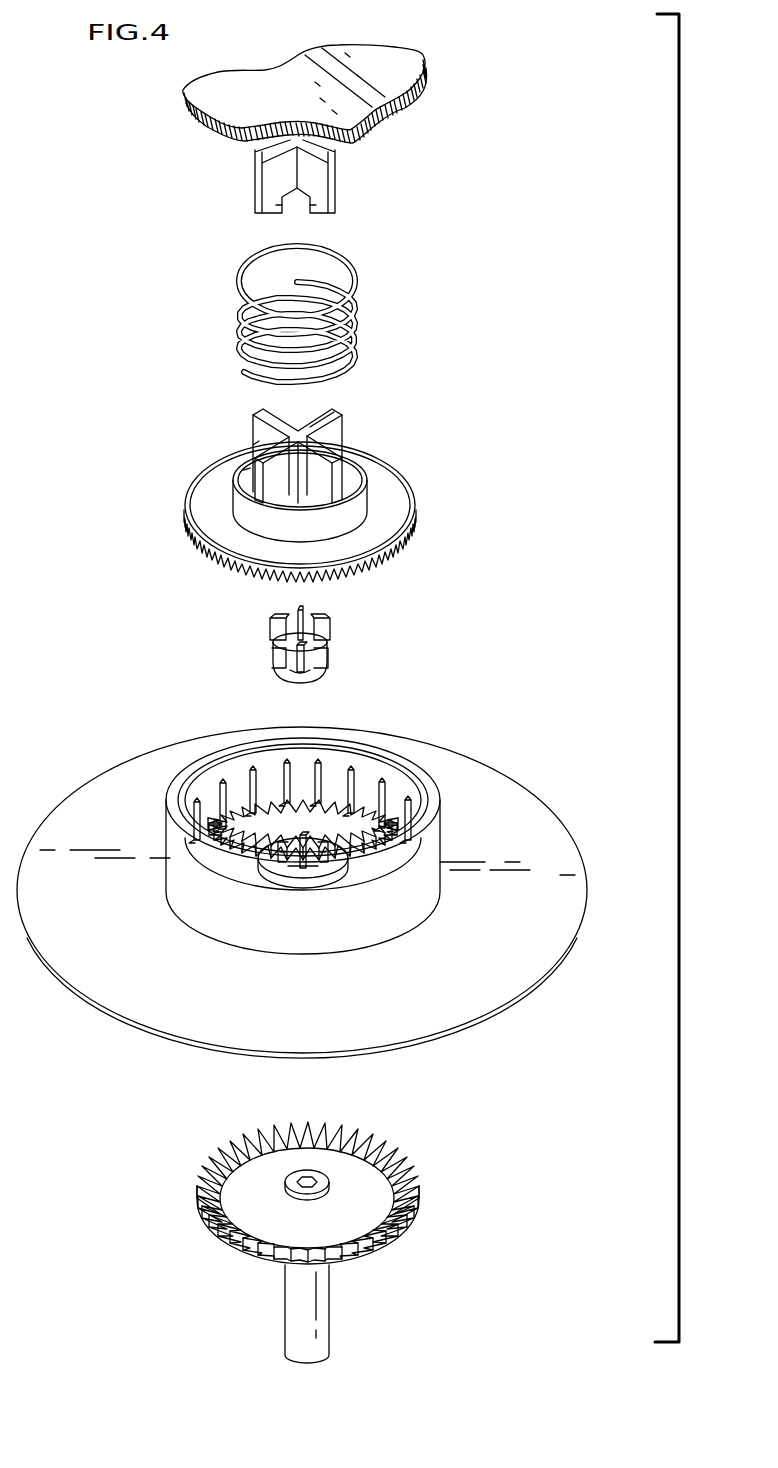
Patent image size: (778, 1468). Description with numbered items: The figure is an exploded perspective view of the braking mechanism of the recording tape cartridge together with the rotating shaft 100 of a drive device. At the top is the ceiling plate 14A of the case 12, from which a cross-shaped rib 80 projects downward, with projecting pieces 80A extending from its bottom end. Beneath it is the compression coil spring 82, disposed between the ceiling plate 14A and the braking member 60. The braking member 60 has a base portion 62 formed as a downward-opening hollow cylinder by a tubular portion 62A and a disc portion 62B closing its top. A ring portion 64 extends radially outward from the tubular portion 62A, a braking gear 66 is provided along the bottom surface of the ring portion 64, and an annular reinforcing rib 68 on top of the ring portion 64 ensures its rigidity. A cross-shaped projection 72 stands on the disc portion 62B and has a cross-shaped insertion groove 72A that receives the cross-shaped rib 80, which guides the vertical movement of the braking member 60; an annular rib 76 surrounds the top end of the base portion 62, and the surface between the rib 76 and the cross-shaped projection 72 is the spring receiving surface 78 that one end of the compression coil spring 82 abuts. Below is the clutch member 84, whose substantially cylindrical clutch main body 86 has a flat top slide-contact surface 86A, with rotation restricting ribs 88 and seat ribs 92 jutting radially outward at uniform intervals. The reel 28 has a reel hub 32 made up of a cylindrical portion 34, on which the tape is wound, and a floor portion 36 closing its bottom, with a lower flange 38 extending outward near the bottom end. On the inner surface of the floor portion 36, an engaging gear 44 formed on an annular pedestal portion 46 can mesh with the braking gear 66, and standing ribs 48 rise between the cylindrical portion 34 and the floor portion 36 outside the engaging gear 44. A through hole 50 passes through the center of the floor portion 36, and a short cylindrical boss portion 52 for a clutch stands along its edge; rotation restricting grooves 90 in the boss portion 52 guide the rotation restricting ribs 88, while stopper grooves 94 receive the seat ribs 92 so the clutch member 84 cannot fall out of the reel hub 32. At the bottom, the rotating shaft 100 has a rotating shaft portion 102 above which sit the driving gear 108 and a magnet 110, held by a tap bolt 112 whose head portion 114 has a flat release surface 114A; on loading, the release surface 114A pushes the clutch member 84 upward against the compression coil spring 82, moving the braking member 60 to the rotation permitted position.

The ceiling plate 14A is at (341, 78).
The case 12 is at (380, 63).
The cross-shaped rib 80 is at (300, 193).
The projecting pieces 80A is at (272, 220).
The compression coil spring 82 is at (372, 303).
The braking member 60 is at (290, 485).
The base portion 62 is at (218, 497).
The tubular portion 62A is at (240, 503).
The disc portion 62B is at (243, 482).
The ring portion 64 is at (377, 480).
The braking gear 66 is at (382, 570).
The reinforcing rib 68 is at (405, 470).
The cross-shaped projection 72 is at (280, 440).
The insertion groove 72A is at (317, 422).
The annular rib 76 is at (247, 452).
The spring receiving surface 78 is at (248, 475).
The clutch member 84 is at (342, 653).
The clutch main body 86 is at (300, 673).
The slide-contact surface 86A is at (295, 665).
The rotation restricting ribs 88 is at (303, 612).
The seat ribs 92 is at (285, 626).
The reel 28 is at (334, 868).
The reel hub 32 is at (370, 769).
The cylindrical portion 34 is at (415, 778).
The floor portion 36 is at (363, 815).
The lower flange 38 is at (553, 917).
The engaging gear 44 is at (278, 855).
The pedestal portion 46 is at (243, 858).
The standing ribs 48 is at (195, 812).
The through hole 50 is at (336, 917).
The boss portion for a clutch 52 is at (258, 870).
The rotation restricting grooves 90 is at (332, 872).
The stopper grooves 94 is at (291, 876).
The rotating shaft 100 is at (357, 1222).
The rotating shaft portion 102 is at (323, 1308).
The driving gear 108 is at (387, 1140).
The magnet 110 is at (365, 1207).
The tap bolt 112 is at (307, 1185).
The head portion 114 is at (294, 1141).
The release surface 114A is at (313, 1158).